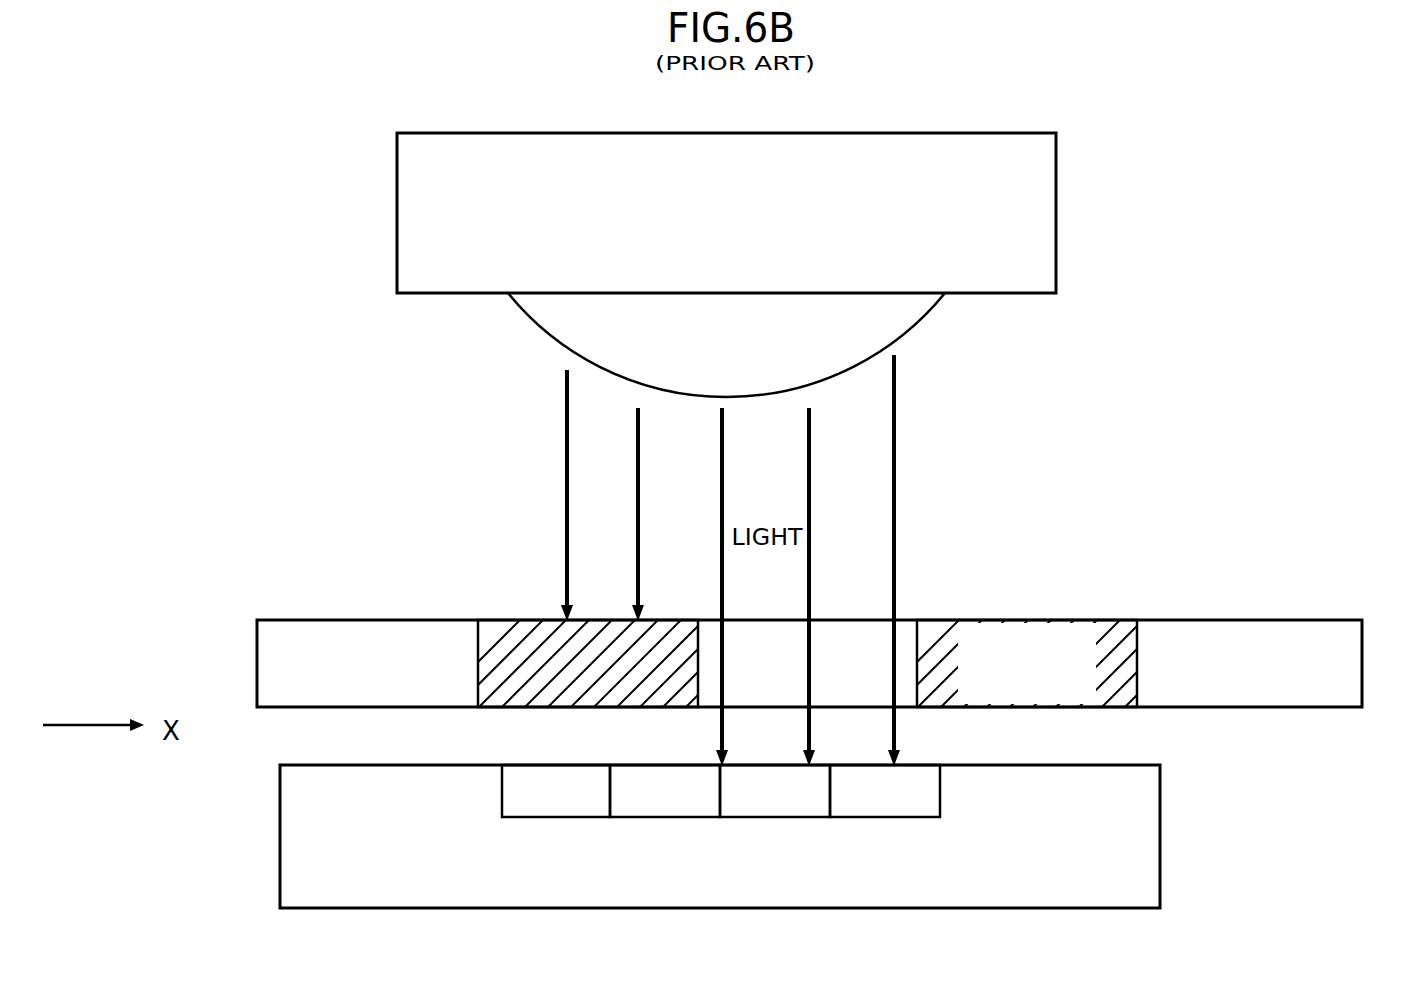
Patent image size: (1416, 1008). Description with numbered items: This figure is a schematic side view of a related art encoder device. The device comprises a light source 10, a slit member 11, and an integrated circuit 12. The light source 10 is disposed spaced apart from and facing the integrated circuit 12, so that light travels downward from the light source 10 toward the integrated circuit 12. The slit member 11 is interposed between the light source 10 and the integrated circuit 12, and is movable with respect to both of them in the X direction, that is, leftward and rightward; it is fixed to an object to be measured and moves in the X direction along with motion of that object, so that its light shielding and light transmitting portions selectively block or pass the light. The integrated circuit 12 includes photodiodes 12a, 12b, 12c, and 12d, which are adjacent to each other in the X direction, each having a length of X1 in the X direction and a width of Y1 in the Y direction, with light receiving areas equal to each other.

The light source 10 is at (1056, 253).
The slit member 11 is at (1362, 660).
The integrated circuit 12 is at (1160, 853).
The photodiode 12a is at (538, 764).
The photodiode 12b is at (683, 764).
The photodiode 12c is at (762, 763).
The photodiode 12d is at (918, 762).